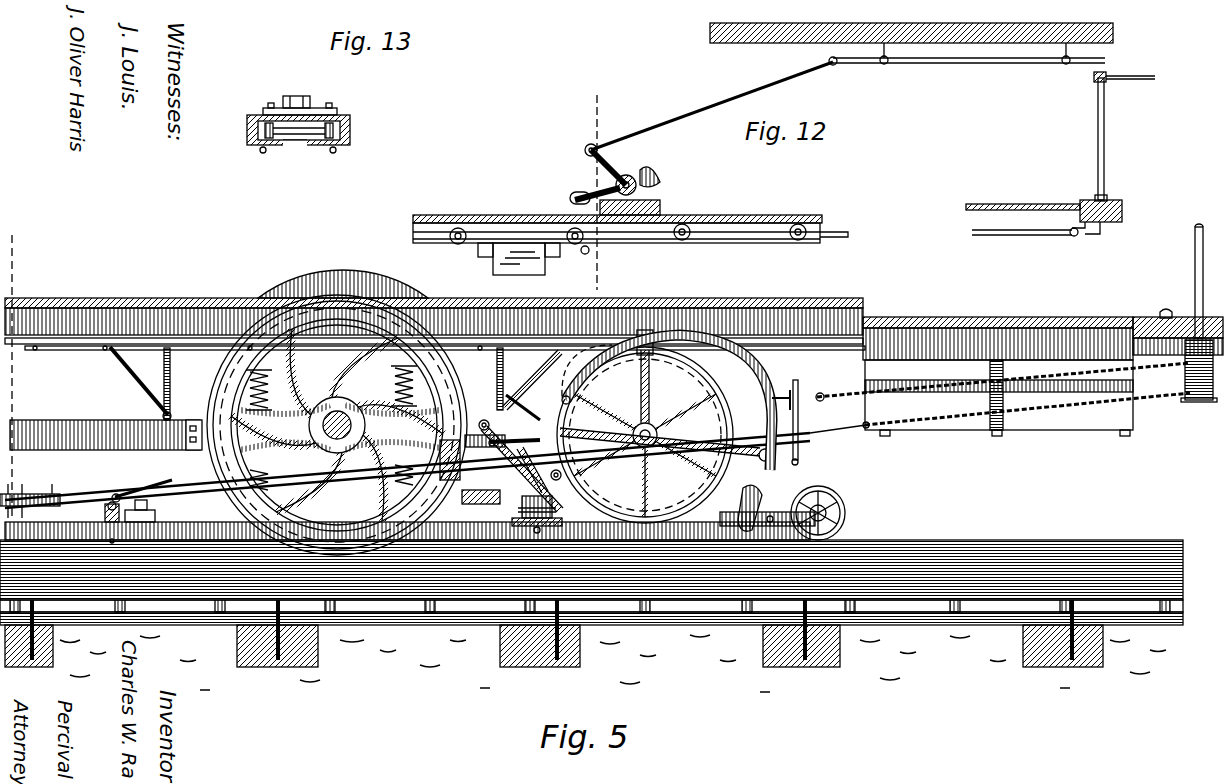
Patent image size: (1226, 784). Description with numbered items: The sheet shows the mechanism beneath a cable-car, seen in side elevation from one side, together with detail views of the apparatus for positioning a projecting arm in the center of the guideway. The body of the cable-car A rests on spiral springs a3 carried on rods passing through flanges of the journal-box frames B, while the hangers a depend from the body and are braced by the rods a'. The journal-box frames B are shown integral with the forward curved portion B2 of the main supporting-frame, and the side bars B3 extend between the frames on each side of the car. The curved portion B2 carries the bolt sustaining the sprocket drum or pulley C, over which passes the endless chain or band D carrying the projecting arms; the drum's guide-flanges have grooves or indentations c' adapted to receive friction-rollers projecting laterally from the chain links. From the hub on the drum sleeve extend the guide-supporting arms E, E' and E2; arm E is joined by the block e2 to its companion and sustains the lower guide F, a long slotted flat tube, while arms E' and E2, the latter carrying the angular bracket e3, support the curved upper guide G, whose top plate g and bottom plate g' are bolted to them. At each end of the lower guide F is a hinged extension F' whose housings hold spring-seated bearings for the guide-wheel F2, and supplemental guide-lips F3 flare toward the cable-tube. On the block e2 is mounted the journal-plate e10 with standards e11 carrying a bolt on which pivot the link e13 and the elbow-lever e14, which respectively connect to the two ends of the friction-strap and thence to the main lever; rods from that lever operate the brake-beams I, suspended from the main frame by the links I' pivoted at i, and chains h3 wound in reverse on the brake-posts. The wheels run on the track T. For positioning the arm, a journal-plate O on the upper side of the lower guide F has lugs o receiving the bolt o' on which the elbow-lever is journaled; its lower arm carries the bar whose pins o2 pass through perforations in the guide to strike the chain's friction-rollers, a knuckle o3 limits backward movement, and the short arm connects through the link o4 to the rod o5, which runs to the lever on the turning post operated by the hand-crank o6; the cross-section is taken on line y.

In FIG. 12, the body of the cable-car A is at (1044, 202).
In FIG. 5, the body of the cable-car A is at (614, 315).
In FIG. 5, the journal-box frames B is at (407, 520).
In FIG. 5, the forward curved portion of the main supporting-frame B2 is at (537, 405).
In FIG. 5, the side bars of the main frame B3 is at (106, 435).
In FIG. 5, the endless chain or band D is at (445, 356).
In FIG. 5, the hangers a is at (130, 381).
In FIG. 5, the brace rods a' is at (333, 384).
In FIG. 5, the spiral springs a3 is at (337, 425).
In FIG. 5, the sprocket drum or pulley C is at (580, 388).
In FIG. 5, the grooves or indentations c' is at (557, 388).
In FIG. 5, the guide-supporting arm E is at (645, 435).
In FIG. 5, the guide-supporting arm E' is at (665, 456).
In FIG. 5, the guide-supporting arm E2 is at (650, 378).
In FIG. 5, the block e2 is at (530, 520).
In FIG. 5, the angular bracket e3 is at (653, 332).
In FIG. 5, the journal-plate e10 is at (522, 504).
In FIG. 5, the standards e11 is at (558, 479).
In FIG. 5, the link e13 is at (520, 390).
In FIG. 5, the elbow-lever e14 is at (525, 475).
In FIG. 13, the lower guide F is at (309, 130).
In FIG. 12, the lower guide F is at (630, 232).
In FIG. 5, the lower guide F is at (481, 503).
In FIG. 5, the extension F' is at (746, 508).
In FIG. 5, the guide-wheel F2 is at (847, 510).
In FIG. 5, the supplemental guide-lips F3 is at (768, 512).
In FIG. 5, the curved upper guide G is at (669, 402).
In FIG. 5, the top plate g is at (779, 394).
In FIG. 5, the bottom plate g' is at (769, 422).
In FIG. 5, the chains h3 is at (1160, 394).
In FIG. 5, the brake-beams I is at (501, 471).
In FIG. 5, the links I' is at (510, 462).
In FIG. 5, the pivotal connection i is at (484, 420).
In FIG. 5, the track rail T is at (591, 582).
In FIG. 12, the journal-plate O is at (640, 196).
In FIG. 13, the lugs o is at (300, 89).
In FIG. 5, the lugs o is at (124, 543).
In FIG. 13, the bolt o' is at (300, 85).
In FIG. 12, the bolt o' is at (587, 164).
In FIG. 13, the pins o2 is at (318, 108).
In FIG. 12, the pins o2 is at (575, 210).
In FIG. 5, the pins o2 is at (106, 518).
In FIG. 12, the knuckle o3 is at (1085, 228).
In FIG. 12, the link o4 is at (764, 92).
In FIG. 5, the link o4 is at (136, 480).
In FIG. 12, the rod o5 is at (992, 66).
In FIG. 12, the hand-crank o6 is at (1112, 75).
In FIG. 12, the section line y is at (597, 190).